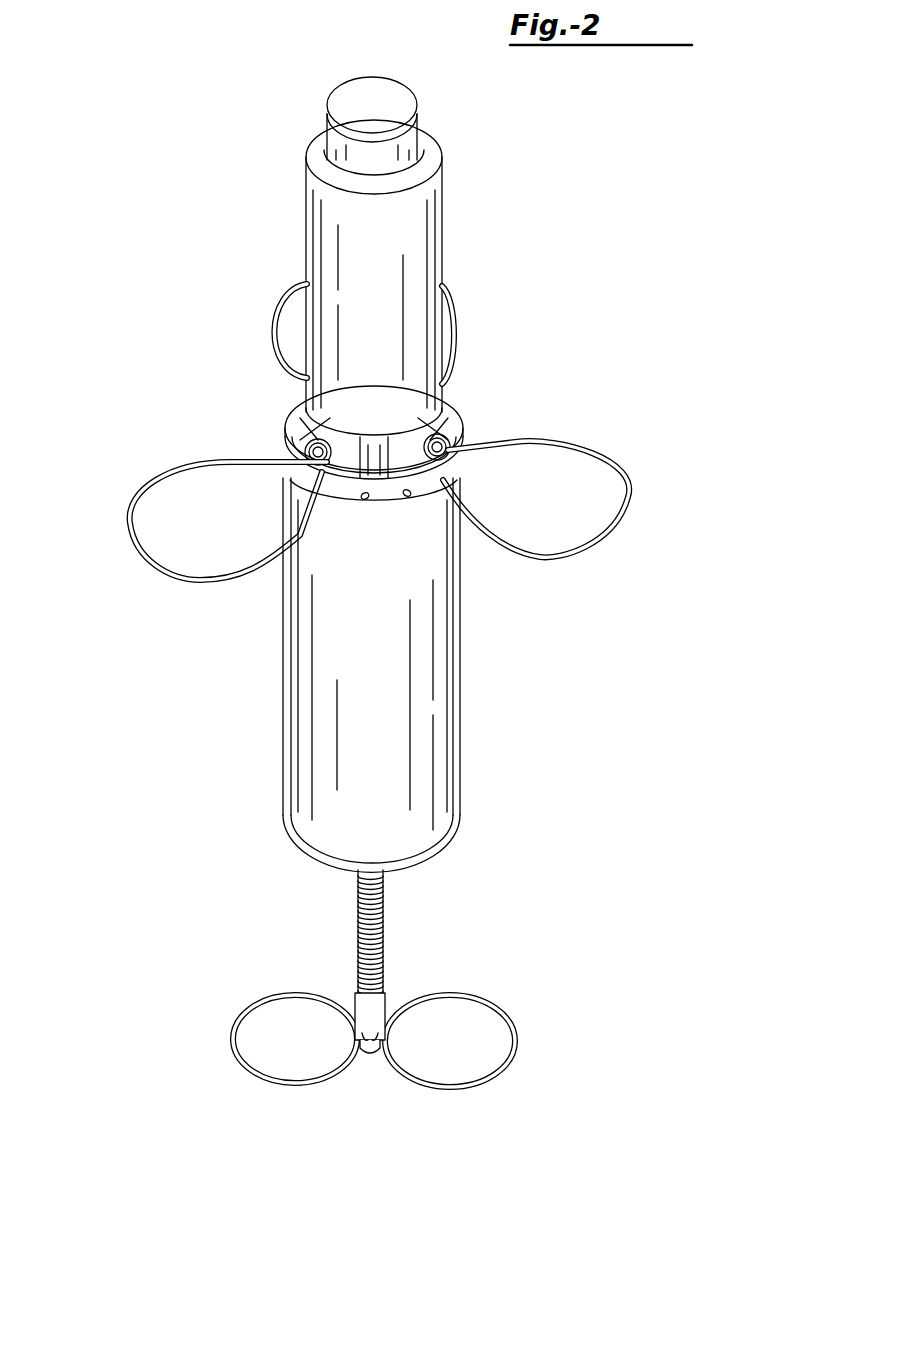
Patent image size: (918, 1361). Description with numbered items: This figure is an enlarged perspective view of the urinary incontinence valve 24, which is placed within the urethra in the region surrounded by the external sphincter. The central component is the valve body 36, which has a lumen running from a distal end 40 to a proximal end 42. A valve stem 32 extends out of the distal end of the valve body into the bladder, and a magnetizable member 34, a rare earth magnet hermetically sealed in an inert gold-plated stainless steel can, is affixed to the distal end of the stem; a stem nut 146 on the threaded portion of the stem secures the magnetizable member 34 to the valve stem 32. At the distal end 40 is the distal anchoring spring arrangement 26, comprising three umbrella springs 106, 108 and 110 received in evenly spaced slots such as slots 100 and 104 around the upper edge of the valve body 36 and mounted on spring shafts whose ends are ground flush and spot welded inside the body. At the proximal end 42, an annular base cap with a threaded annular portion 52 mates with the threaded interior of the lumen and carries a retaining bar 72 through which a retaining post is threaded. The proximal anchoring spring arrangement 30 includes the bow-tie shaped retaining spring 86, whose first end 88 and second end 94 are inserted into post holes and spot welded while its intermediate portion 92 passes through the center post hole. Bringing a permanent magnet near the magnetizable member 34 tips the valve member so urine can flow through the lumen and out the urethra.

The urinary incontinence valve 24 is at (328, 675).
The distal anchoring spring arrangement 26 is at (384, 467).
The proximal anchoring spring arrangement 30 is at (377, 1068).
The valve stem 32 is at (388, 494).
The magnetizable member 34 is at (440, 240).
The valve body 36 is at (462, 692).
The distal end 40 is at (453, 405).
The proximal end 42 is at (455, 785).
The threaded annular portion 52 is at (310, 870).
The retaining bar 72 is at (385, 945).
The retaining spring 86 is at (377, 1074).
The first end 88 is at (405, 1003).
The intermediate portion 92 is at (383, 1062).
The second end 94 is at (340, 1075).
The slot 100 is at (287, 482).
The slot 104 is at (452, 478).
The umbrella spring 106 is at (152, 488).
The umbrella spring 108 is at (272, 318).
The umbrella spring 110 is at (560, 440).
The stem nut 146 is at (422, 133).